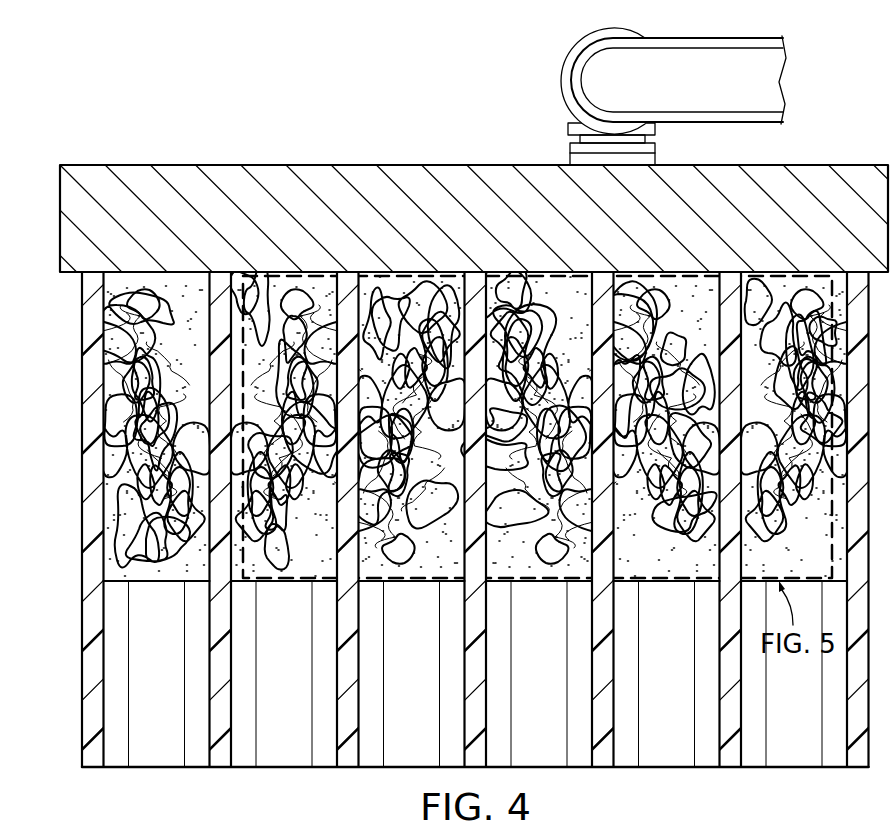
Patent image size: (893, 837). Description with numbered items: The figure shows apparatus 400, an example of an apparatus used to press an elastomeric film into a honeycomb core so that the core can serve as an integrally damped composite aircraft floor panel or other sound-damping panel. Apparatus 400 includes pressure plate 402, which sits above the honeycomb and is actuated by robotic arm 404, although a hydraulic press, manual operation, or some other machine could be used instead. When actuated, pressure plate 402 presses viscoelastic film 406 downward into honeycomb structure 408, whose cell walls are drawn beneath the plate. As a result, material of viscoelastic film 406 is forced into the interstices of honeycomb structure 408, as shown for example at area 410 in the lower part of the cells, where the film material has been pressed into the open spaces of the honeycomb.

The apparatus 400 is at (137, 86).
The pressure plate 402 is at (264, 172).
The robotic arm 404 is at (787, 80).
The viscoelastic film 406 is at (110, 422).
The honeycomb structure 408 is at (90, 518).
The area 410 is at (152, 598).